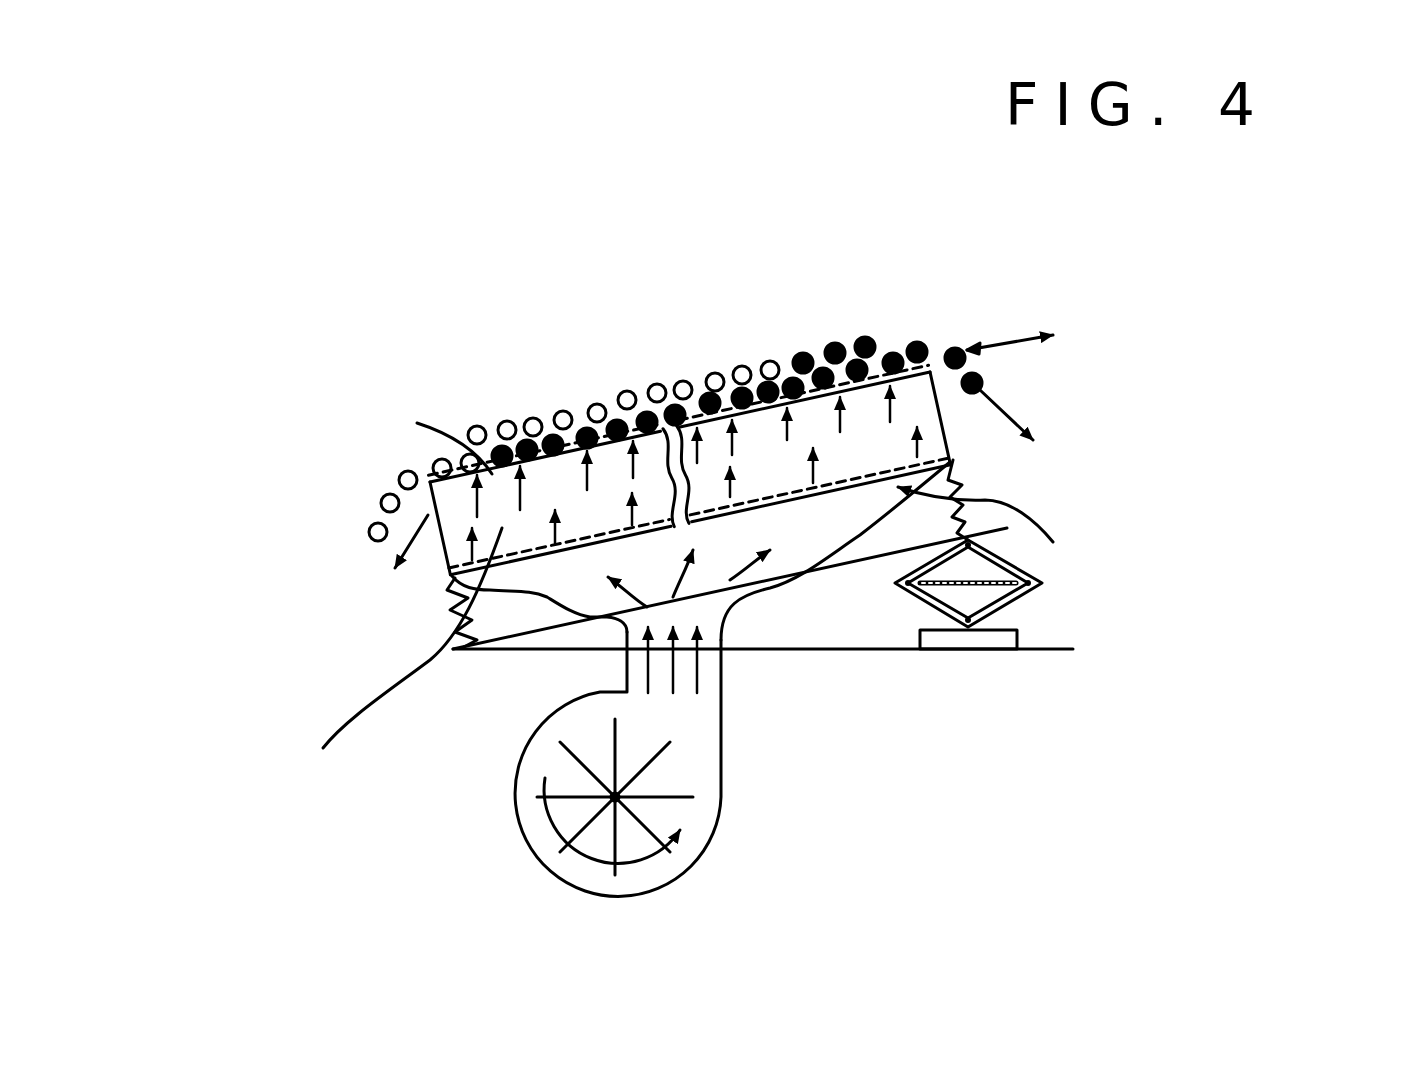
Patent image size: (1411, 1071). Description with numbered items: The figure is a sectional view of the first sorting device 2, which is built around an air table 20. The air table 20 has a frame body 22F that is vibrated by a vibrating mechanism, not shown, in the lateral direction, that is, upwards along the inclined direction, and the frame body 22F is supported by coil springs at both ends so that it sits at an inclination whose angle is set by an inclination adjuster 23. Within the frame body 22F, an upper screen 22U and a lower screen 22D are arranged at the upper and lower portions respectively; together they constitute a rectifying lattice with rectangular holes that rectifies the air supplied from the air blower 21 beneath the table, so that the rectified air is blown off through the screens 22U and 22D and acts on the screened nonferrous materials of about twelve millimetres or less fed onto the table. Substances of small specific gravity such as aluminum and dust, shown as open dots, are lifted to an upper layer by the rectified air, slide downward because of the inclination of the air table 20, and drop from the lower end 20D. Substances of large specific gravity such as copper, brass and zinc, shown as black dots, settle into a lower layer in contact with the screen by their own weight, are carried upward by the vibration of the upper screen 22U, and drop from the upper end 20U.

The first sorting device 2 is at (826, 302).
The air table 20 is at (770, 443).
The upper end 20U is at (928, 370).
The lower end 20D is at (430, 483).
The air blower 21 is at (562, 815).
The upper screen 22U is at (520, 447).
The lower screen 22D is at (770, 482).
The frame body 22F is at (580, 544).
The inclination adjuster 23 is at (1057, 615).